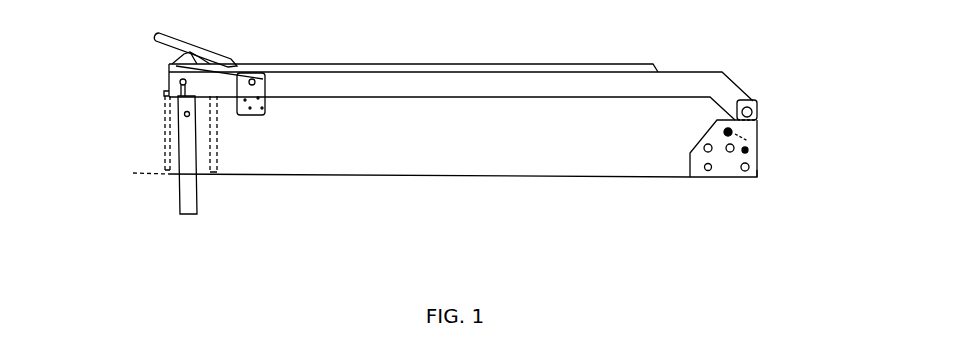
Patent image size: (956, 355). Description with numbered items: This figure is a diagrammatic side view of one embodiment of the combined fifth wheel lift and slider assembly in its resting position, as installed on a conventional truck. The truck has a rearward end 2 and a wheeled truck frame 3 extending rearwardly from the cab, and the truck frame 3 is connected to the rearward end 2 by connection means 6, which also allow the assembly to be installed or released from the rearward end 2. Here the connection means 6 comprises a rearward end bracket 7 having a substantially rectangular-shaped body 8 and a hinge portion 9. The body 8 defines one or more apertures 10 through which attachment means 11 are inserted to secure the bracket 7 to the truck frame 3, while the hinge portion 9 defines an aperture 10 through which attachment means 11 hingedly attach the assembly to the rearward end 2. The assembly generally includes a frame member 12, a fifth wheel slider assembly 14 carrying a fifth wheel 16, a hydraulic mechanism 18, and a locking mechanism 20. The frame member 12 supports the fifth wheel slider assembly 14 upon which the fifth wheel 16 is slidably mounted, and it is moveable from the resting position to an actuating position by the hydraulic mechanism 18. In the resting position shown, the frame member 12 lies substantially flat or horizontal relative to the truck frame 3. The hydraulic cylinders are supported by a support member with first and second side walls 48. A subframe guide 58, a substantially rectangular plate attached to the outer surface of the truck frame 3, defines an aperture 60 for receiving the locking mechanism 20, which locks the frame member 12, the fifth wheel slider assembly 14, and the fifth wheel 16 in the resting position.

The rearward end 2 is at (765, 223).
The truck frame 3 is at (434, 137).
The connection means 6 is at (836, 149).
The rearward end bracket 7 is at (727, 162).
The body 8 is at (729, 152).
The hinge portion 9 is at (752, 112).
The aperture 10 is at (754, 177).
The attachment means 11 is at (747, 150).
The frame member 12 is at (458, 82).
The fifth wheel slider assembly 14 is at (641, 66).
The fifth wheel 16 is at (157, 34).
The hydraulic mechanism 18 is at (188, 218).
The locking mechanism 20 is at (75, 55).
The side walls 48 is at (215, 152).
The subframe guide 58 is at (256, 80).
The aperture 60 is at (172, 64).